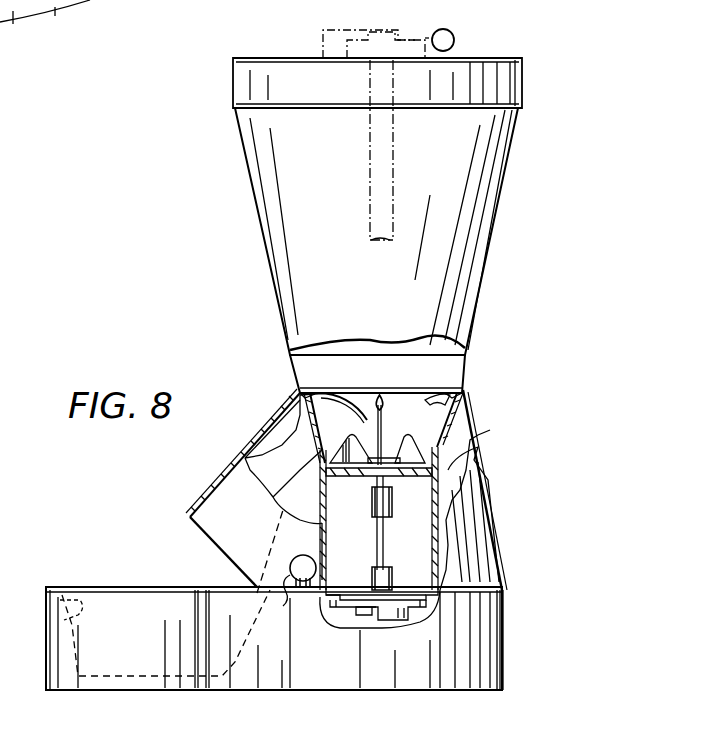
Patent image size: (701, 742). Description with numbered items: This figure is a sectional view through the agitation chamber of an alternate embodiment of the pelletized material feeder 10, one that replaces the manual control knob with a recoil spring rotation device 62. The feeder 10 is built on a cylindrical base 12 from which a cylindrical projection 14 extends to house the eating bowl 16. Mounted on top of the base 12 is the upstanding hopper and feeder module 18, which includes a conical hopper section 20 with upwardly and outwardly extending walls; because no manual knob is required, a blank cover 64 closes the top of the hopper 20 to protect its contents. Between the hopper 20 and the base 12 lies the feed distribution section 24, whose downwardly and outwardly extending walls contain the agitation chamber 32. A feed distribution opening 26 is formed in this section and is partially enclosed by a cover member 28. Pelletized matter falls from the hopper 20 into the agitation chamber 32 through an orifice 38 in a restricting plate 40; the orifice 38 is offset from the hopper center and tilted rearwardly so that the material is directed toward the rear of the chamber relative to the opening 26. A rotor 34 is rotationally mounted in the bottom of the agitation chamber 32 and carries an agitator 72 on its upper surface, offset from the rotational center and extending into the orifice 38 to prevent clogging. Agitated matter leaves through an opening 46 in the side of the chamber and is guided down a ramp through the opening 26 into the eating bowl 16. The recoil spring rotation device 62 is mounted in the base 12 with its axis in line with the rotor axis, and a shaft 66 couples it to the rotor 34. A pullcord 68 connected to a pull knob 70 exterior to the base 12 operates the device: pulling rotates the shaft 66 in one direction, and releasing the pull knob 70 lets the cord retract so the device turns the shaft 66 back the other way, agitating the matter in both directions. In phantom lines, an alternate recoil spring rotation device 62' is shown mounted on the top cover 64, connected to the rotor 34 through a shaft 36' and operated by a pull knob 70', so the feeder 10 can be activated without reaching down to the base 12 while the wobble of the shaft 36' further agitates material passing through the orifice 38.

The pelletized material feeder 10 is at (188, 268).
The cylindrical base 12 is at (55, 18).
The cylindrical projection 14 is at (46, 648).
The eating bowl 16 is at (62, 606).
The hopper and feeder module 18 is at (455, 395).
The conical hopper section 20 is at (262, 177).
The feed distribution section 24 is at (490, 545).
The feed distribution opening 26 is at (212, 546).
The cover member 28 is at (222, 471).
The agitation chamber 32 is at (440, 418).
The rotor 34 is at (420, 446).
The shaft 36' is at (353, 150).
The orifice 38 is at (405, 400).
The restricting plate 40 is at (360, 390).
The opening 46 is at (305, 415).
The recoil spring rotation device 62 is at (380, 624).
The recoil spring rotation device 62' is at (378, 29).
The blank cover 64 is at (240, 78).
The shaft 66 is at (386, 540).
The pullcord 68 is at (340, 612).
The pull knob 70 is at (291, 587).
The pull knob 70' is at (468, 30).
The agitator 72 is at (379, 393).